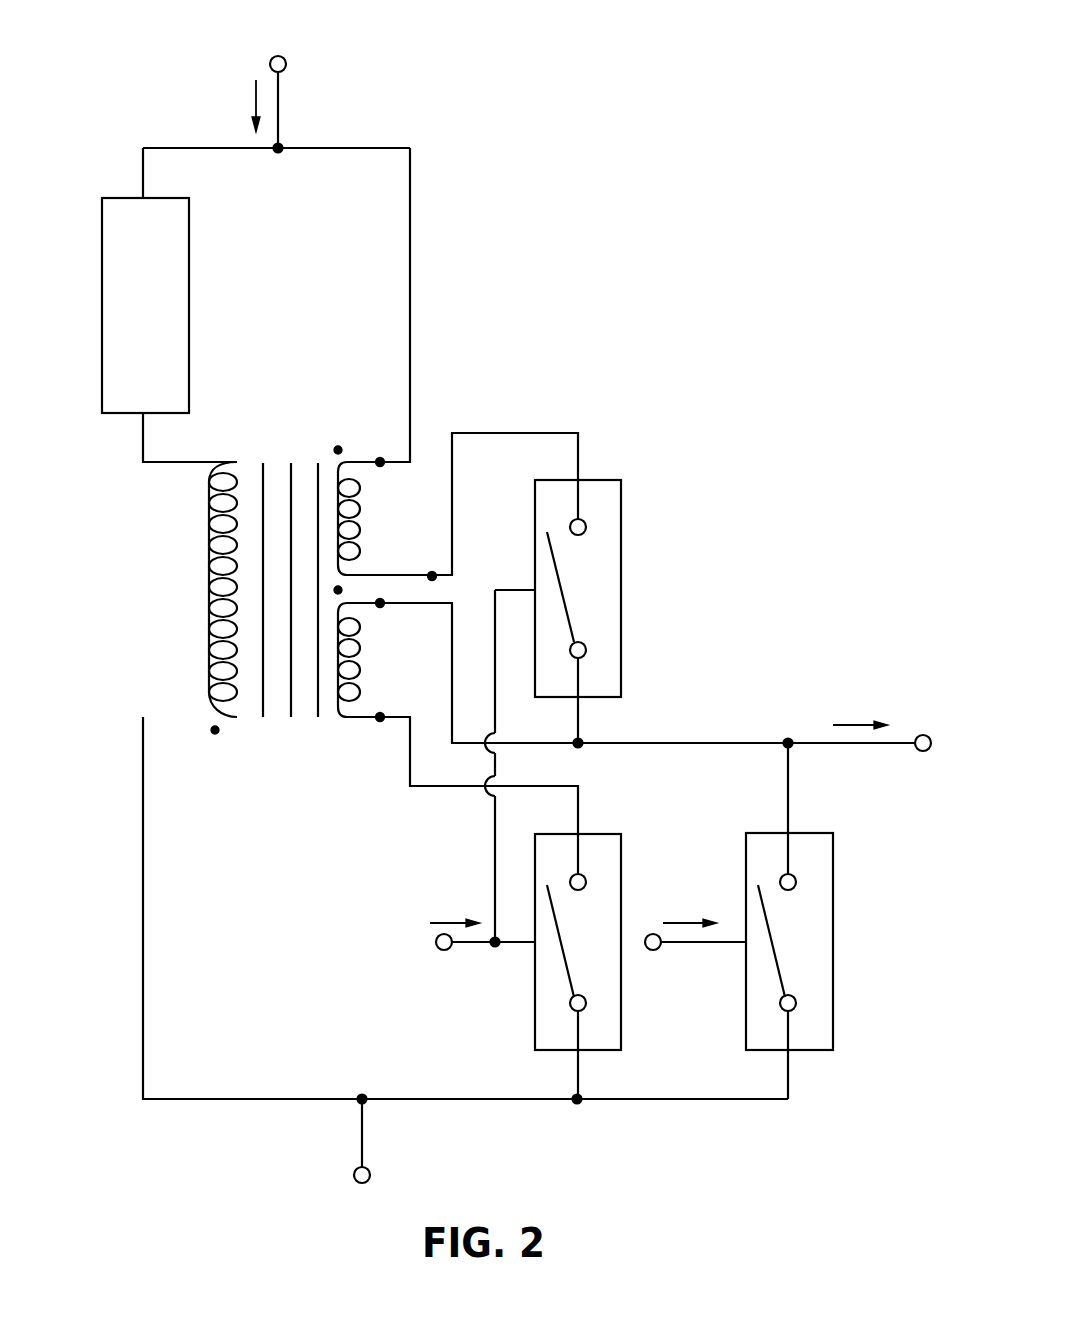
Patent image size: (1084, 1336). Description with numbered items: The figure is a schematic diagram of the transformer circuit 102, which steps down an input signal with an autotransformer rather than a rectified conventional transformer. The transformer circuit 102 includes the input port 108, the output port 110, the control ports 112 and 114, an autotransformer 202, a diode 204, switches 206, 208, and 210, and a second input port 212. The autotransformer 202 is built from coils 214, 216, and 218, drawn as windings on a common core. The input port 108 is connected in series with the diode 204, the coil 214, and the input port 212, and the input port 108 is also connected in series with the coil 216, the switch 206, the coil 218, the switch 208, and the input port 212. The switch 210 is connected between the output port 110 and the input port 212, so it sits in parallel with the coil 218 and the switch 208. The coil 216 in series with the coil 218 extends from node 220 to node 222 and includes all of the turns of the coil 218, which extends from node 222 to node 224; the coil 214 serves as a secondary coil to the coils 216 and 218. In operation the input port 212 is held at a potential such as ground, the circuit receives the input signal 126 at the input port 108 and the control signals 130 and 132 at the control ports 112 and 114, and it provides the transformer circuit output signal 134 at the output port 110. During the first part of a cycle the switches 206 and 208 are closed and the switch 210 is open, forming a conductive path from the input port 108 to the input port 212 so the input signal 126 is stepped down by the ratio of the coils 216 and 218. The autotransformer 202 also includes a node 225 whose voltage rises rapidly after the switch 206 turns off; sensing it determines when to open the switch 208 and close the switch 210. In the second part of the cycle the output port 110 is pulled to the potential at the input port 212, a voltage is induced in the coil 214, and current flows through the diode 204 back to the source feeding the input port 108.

The transformer circuit 102 is at (768, 112).
The input port 108 is at (287, 62).
The output port 110 is at (923, 751).
The control port 112 is at (444, 950).
The control port 114 is at (653, 950).
The input signal 126 is at (252, 106).
The control signal 130 is at (457, 920).
The control signal 132 is at (692, 920).
The transformer circuit output signal 134 is at (861, 722).
The autotransformer 202 is at (266, 478).
The diode 204 is at (100, 302).
The switch 206 is at (623, 589).
The switch 208 is at (600, 832).
The switch 210 is at (812, 832).
The input port 212 is at (371, 1174).
The coil 214 is at (206, 582).
The coil 216 is at (362, 508).
The coil 218 is at (362, 672).
The node 220 is at (381, 458).
The node 222 is at (379, 721).
The node 224 is at (381, 607).
The node 225 is at (432, 574).